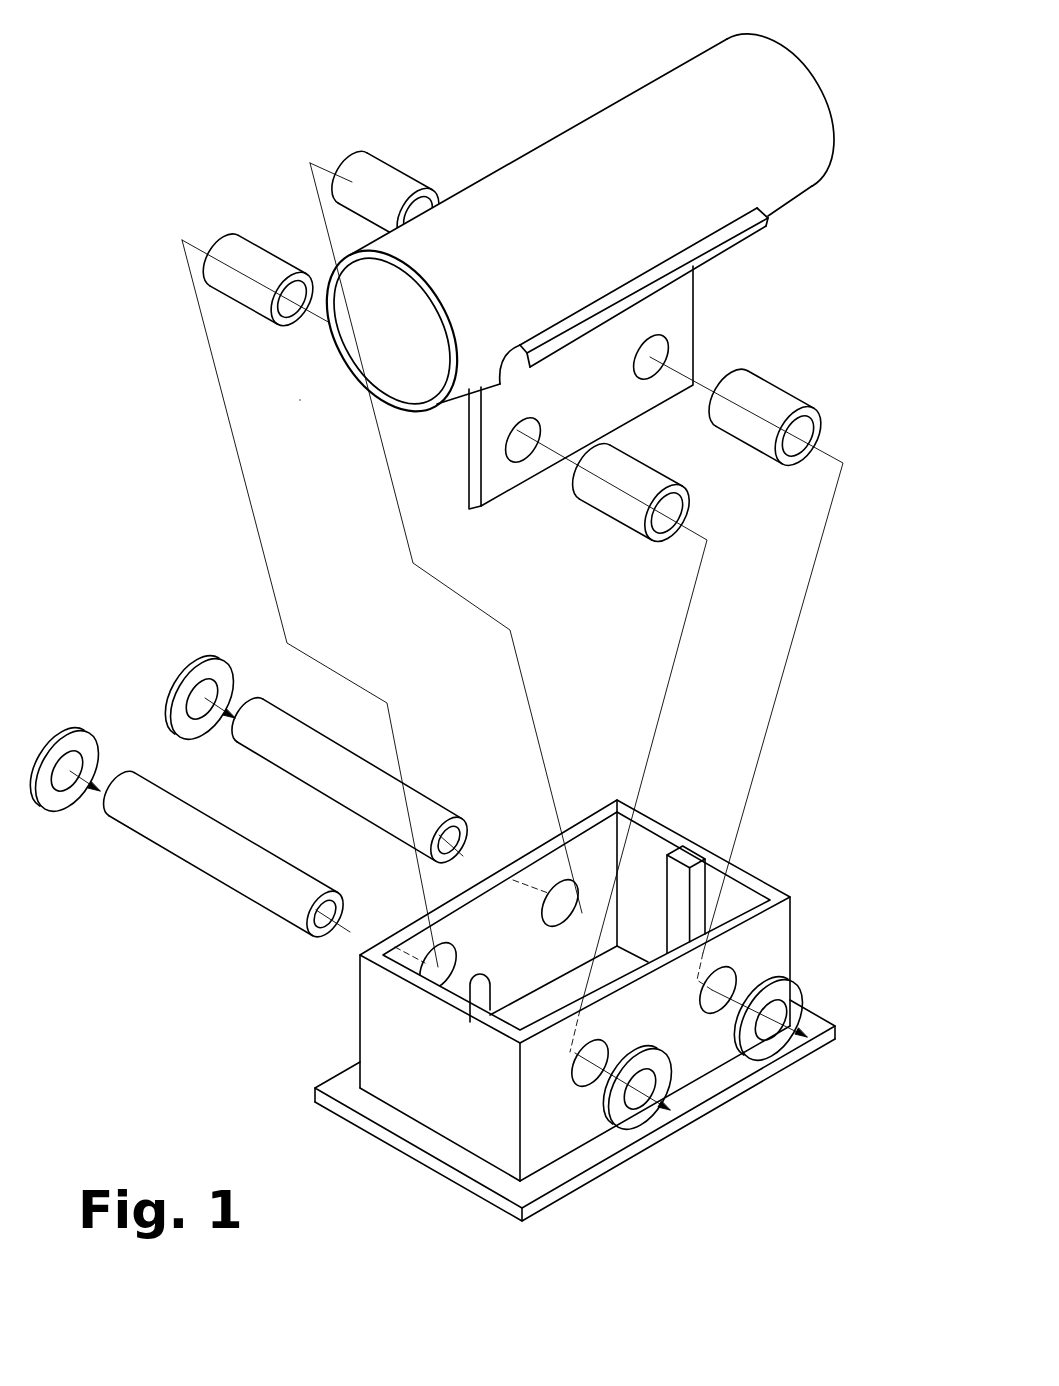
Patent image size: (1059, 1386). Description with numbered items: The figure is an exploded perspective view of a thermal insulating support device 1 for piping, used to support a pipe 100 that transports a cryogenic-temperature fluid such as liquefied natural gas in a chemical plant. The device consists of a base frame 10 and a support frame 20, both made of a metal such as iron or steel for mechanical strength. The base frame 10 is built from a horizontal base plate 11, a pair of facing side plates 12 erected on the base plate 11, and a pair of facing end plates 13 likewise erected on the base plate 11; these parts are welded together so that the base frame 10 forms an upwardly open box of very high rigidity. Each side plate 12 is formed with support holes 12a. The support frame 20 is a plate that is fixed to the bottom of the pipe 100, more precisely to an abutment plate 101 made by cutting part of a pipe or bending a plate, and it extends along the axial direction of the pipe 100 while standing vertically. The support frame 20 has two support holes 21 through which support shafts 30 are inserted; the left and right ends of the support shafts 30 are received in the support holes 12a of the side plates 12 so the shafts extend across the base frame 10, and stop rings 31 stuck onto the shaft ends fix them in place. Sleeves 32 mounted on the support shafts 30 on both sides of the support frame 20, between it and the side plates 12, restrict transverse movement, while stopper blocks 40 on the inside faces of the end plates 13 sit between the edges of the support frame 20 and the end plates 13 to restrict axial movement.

The thermal insulating support device 1 is at (222, 540).
The base frame 10 is at (584, 994).
The base plate 11 is at (340, 1082).
The side plates 12 is at (597, 845).
The support holes 12a is at (557, 880).
The end plates 13 is at (740, 895).
The support frame 20 is at (613, 399).
The support holes 21 is at (668, 352).
The support shafts 30 is at (210, 868).
The stop rings 31 is at (193, 668).
The sleeves 32 is at (377, 167).
The stopper blocks 40 is at (683, 852).
The pipe 100 is at (580, 222).
The abutment plate 101 is at (757, 236).